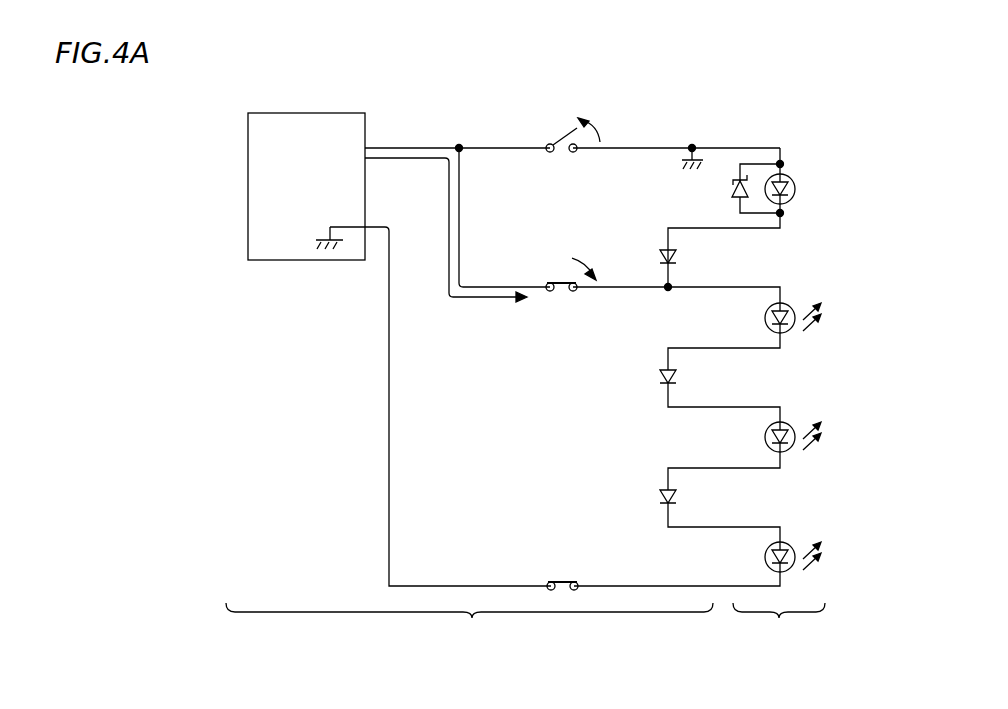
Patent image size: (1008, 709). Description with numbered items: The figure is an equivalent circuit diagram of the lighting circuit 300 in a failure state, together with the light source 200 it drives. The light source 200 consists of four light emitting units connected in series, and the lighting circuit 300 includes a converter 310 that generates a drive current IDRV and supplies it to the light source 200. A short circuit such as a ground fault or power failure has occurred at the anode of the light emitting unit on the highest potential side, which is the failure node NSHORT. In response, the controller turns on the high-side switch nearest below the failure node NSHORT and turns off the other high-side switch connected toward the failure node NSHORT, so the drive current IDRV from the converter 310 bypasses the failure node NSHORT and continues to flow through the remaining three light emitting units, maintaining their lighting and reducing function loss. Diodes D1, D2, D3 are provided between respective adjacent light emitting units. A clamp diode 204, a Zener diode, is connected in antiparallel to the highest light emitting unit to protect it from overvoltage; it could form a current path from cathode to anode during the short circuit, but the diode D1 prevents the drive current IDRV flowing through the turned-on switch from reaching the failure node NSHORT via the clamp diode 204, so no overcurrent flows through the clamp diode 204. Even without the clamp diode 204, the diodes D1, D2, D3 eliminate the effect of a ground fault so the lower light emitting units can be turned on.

The converter 310 is at (283, 109).
The clamp diode 204 is at (722, 192).
The diode D1 is at (679, 258).
The diode D2 is at (679, 377).
The diode D3 is at (679, 497).
The failure node NSHORT is at (698, 138).
The drive current IDRV is at (467, 313).
The lighting circuit 300 is at (469, 625).
The light source 200 is at (779, 625).